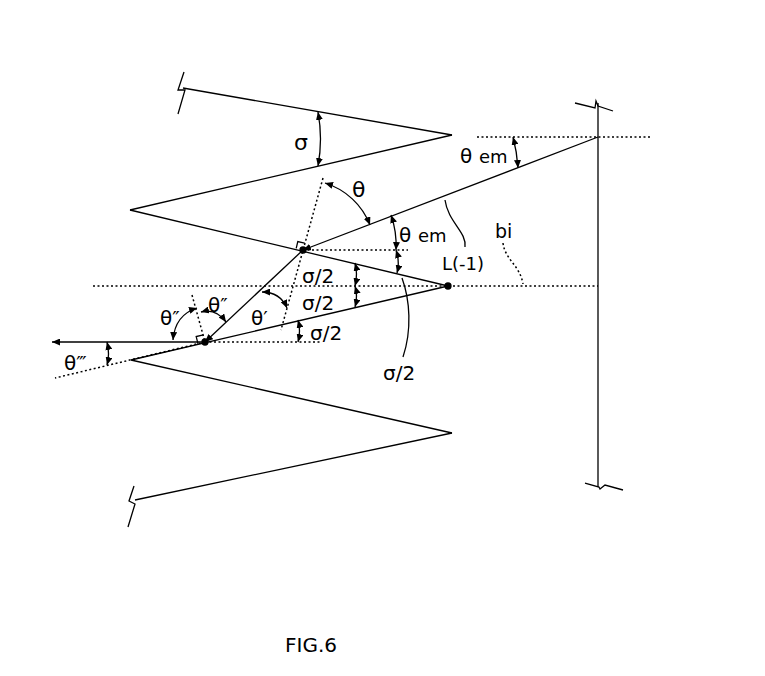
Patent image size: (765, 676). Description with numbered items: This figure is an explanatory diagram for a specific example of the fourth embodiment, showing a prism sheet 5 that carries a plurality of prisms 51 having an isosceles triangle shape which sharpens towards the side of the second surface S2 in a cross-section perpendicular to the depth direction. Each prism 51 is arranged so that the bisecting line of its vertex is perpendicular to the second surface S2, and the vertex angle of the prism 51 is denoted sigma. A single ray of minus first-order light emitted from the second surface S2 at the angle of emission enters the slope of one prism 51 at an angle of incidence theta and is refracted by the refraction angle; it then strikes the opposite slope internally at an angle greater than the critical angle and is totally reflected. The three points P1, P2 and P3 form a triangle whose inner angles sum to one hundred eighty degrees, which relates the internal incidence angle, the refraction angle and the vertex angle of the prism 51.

The prism sheet 5 is at (152, 138).
The prism 51 is at (247, 107).
The second surface S2 is at (598, 220).
The point P1 is at (206, 346).
The point P2 is at (450, 289).
The point P3 is at (299, 252).